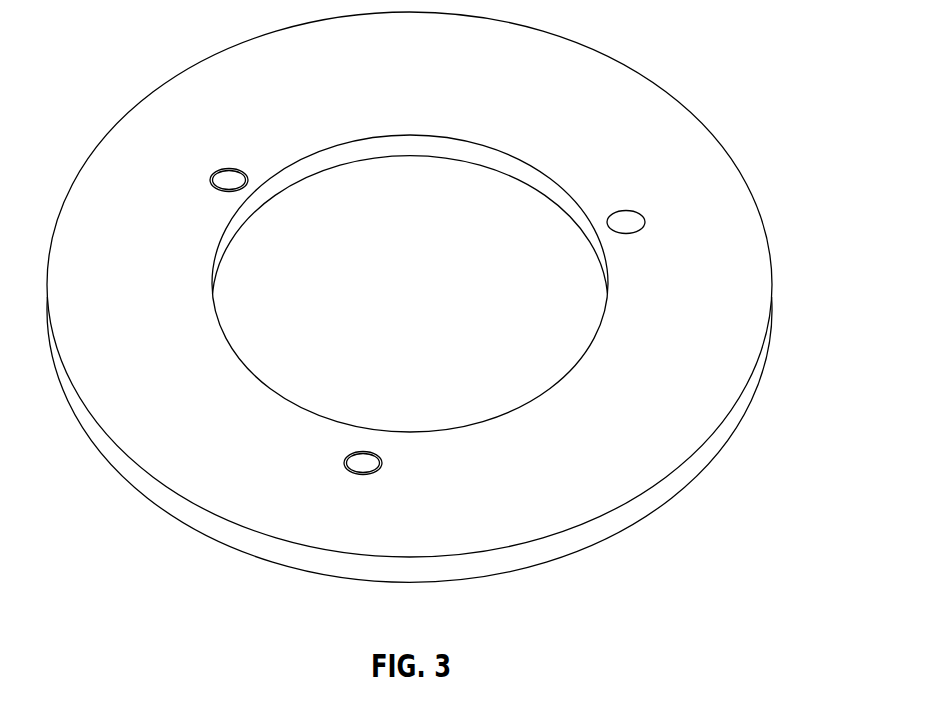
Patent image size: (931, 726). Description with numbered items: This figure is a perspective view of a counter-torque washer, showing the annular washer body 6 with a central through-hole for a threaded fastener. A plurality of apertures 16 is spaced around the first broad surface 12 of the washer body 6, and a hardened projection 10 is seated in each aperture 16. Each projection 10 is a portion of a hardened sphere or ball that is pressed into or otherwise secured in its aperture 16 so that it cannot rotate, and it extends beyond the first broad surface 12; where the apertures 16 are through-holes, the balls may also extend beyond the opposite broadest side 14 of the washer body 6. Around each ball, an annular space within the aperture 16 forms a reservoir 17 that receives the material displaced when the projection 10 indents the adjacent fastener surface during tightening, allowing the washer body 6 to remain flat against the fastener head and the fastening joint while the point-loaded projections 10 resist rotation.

The washer body 6 is at (409, 297).
The hardened projections 10 is at (229, 174).
The first broad surface 12 is at (414, 84).
The opposite broadest side 14 is at (410, 157).
The apertures 16 is at (622, 232).
The reservoir 17 is at (246, 172).